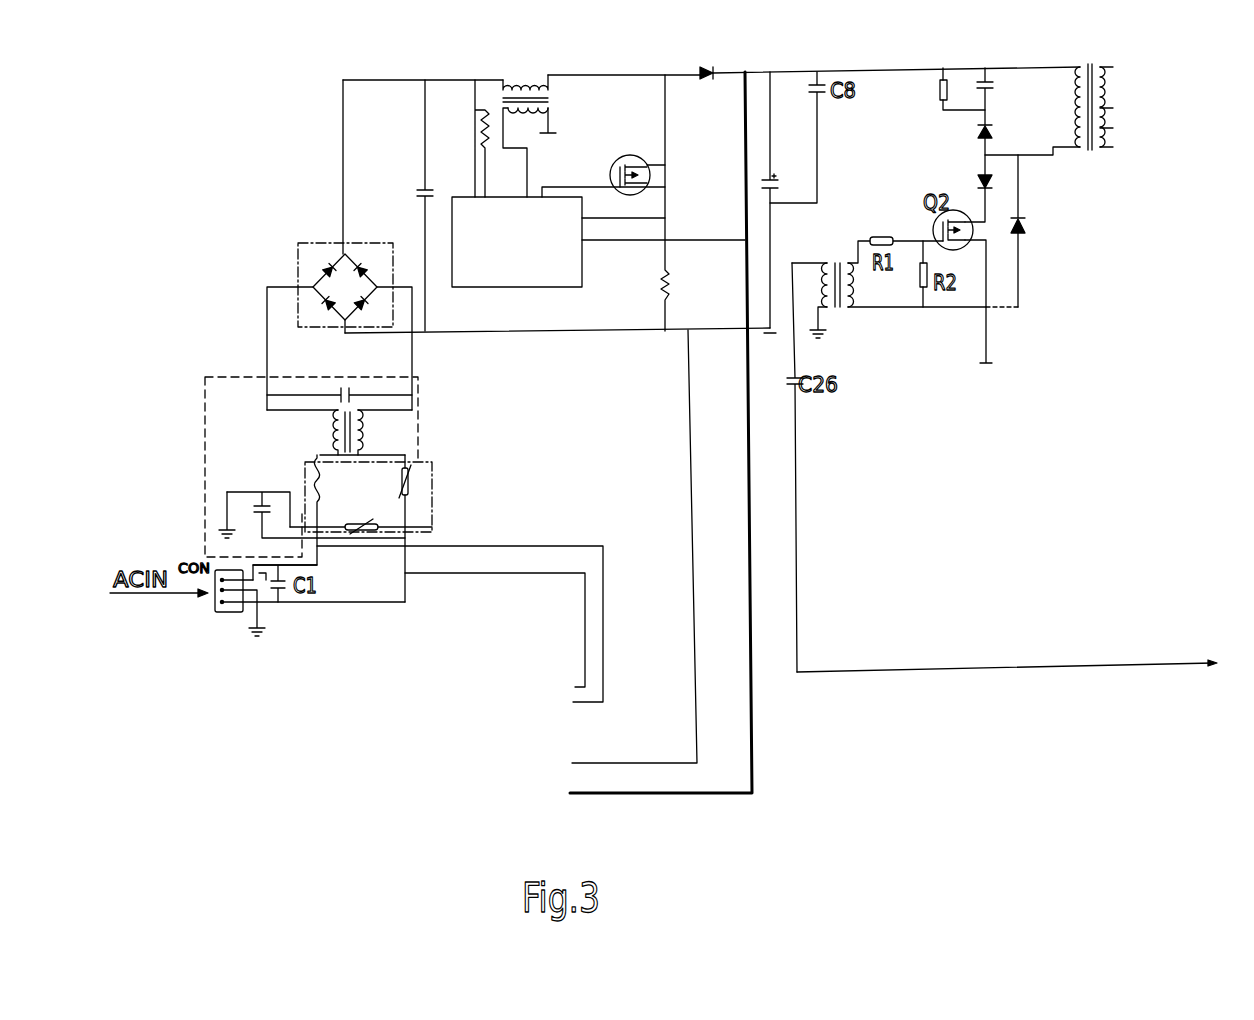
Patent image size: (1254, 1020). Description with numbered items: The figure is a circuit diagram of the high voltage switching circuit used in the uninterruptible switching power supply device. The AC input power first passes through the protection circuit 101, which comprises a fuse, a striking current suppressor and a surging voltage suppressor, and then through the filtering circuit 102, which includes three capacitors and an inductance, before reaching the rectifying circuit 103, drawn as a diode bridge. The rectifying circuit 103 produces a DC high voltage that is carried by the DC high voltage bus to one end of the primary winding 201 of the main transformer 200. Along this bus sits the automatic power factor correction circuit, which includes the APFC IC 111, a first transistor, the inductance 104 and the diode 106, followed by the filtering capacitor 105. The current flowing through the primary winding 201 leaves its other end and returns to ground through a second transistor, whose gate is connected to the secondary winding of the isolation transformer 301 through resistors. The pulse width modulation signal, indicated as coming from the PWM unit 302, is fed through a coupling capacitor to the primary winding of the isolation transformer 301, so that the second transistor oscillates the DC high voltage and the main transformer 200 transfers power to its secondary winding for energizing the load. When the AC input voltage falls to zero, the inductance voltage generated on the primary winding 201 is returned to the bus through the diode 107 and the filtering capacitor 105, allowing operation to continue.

The protection circuit 101 is at (432, 512).
The filtering circuit 102 is at (205, 377).
The rectifying circuit 103 is at (316, 243).
The inductance 104 is at (529, 117).
The filtering capacitor 105 is at (788, 200).
The diode 106 is at (713, 57).
The diode 107 is at (1041, 231).
The APFC IC 111 is at (517, 242).
The main transformer 200 is at (1075, 93).
The primary winding 201 is at (1075, 107).
The isolation transformer 301 is at (823, 285).
The PWM unit 302 is at (1007, 651).